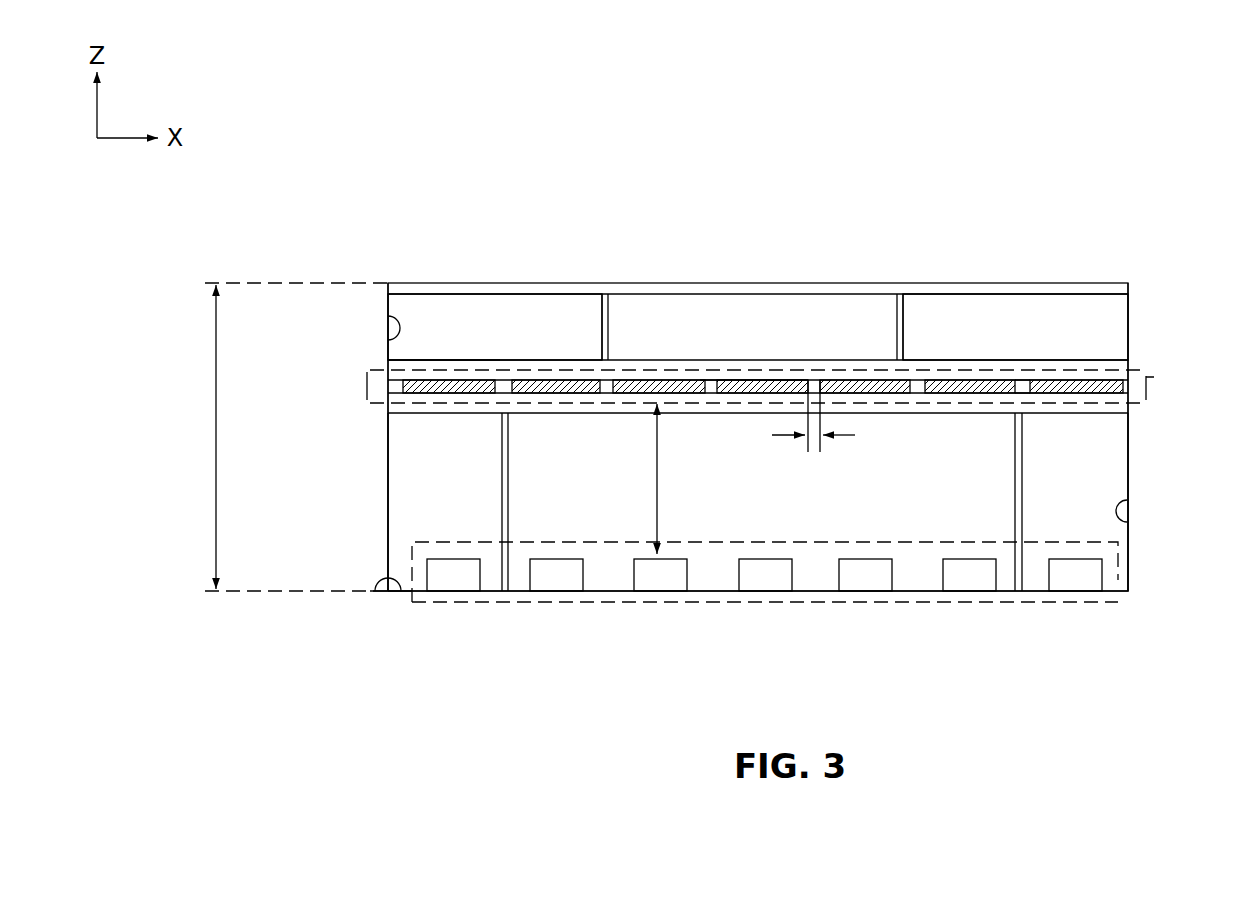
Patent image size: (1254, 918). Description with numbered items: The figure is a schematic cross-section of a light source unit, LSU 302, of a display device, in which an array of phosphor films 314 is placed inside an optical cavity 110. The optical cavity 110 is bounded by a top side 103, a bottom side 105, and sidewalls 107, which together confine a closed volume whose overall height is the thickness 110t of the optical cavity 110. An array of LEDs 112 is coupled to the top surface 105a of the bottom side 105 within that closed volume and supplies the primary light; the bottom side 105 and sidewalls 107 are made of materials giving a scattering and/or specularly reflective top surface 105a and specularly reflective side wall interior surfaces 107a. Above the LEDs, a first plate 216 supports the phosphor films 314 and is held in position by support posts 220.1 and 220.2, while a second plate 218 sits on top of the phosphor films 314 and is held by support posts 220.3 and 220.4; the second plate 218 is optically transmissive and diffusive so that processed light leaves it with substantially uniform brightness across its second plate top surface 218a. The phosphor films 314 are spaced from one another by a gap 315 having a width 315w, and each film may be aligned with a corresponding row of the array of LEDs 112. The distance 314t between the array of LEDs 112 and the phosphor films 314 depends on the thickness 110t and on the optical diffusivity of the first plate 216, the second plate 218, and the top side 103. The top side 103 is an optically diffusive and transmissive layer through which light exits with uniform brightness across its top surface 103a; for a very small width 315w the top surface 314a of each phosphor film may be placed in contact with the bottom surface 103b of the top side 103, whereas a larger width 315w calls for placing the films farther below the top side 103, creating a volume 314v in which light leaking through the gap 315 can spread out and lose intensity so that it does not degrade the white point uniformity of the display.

The LSU 302 is at (1125, 162).
The optical cavity 110 is at (1134, 322).
The thickness of optical cavity 110t is at (217, 447).
The top side 103 is at (412, 290).
The top surface of top side 103a is at (462, 264).
The bottom surface of top side 103b is at (1037, 295).
The sidewalls 107 is at (387, 483).
The side wall interior surfaces 107a is at (388, 340).
The bottom side 105 is at (493, 592).
The top surface of bottom side 105a is at (385, 578).
The array of LEDs 112 is at (1043, 537).
The first plate 216 is at (1117, 405).
The second plate 218 is at (1117, 370).
The second plate top surface 218a is at (427, 360).
The support post 220.1 is at (508, 503).
The support post 220.2 is at (1015, 497).
The support post 220.3 is at (604, 325).
The support post 220.4 is at (904, 322).
The array of phosphor films 314 is at (1154, 377).
The top surface of phosphor film 314a is at (745, 378).
The volume 314v is at (1022, 322).
The distance 314t is at (657, 507).
The gap 315 is at (812, 383).
The width of gap 315w is at (780, 436).